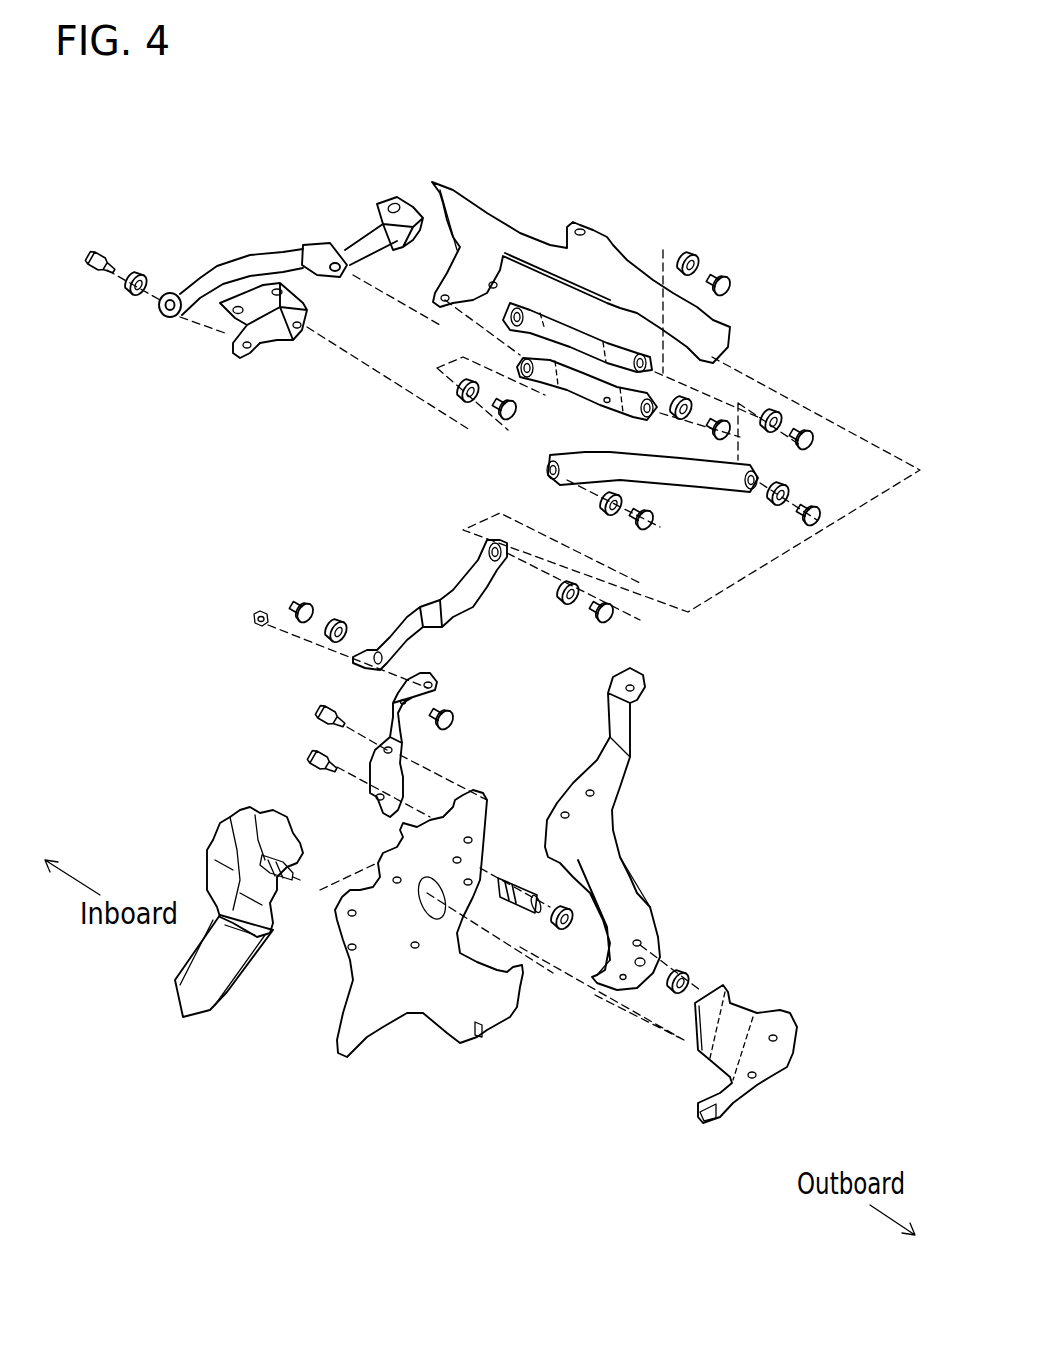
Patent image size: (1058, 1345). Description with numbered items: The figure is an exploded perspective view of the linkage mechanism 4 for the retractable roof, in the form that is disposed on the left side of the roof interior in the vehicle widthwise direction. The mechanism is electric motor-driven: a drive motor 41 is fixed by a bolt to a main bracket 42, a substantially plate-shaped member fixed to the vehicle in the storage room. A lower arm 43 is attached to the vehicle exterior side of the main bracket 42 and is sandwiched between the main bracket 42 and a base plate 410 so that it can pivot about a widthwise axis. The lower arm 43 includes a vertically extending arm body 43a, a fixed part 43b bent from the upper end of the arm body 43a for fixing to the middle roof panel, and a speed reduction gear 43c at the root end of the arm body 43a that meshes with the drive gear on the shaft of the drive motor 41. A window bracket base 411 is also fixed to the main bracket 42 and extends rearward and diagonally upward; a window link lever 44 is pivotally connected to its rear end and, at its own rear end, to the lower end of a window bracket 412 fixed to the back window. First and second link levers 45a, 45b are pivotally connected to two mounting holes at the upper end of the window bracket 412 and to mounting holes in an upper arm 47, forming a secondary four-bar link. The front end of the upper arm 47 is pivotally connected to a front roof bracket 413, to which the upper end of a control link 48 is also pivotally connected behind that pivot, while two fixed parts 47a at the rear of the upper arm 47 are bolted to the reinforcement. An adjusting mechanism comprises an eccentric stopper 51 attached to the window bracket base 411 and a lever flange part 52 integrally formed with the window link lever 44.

The linkage mechanism 4 is at (783, 152).
The upper arm 47 is at (248, 252).
The fixed part 47a is at (353, 237).
The front roof bracket 413 is at (272, 342).
The window bracket 412 is at (526, 225).
The second link lever 45b is at (593, 320).
The first link lever 45a is at (557, 407).
The control link 48 is at (677, 490).
The window link lever 44 is at (453, 620).
The eccentric stopper 51 is at (258, 607).
The lever flange part 52 is at (360, 643).
The window bracket base 411 is at (397, 692).
The lower arm 43 is at (619, 858).
The arm body 43a is at (647, 895).
The fixed part 43b is at (612, 746).
The speed reduction gear 43c is at (595, 996).
The base plate 410 is at (785, 1014).
The drive motor 41 is at (230, 993).
The main bracket 42 is at (428, 1030).